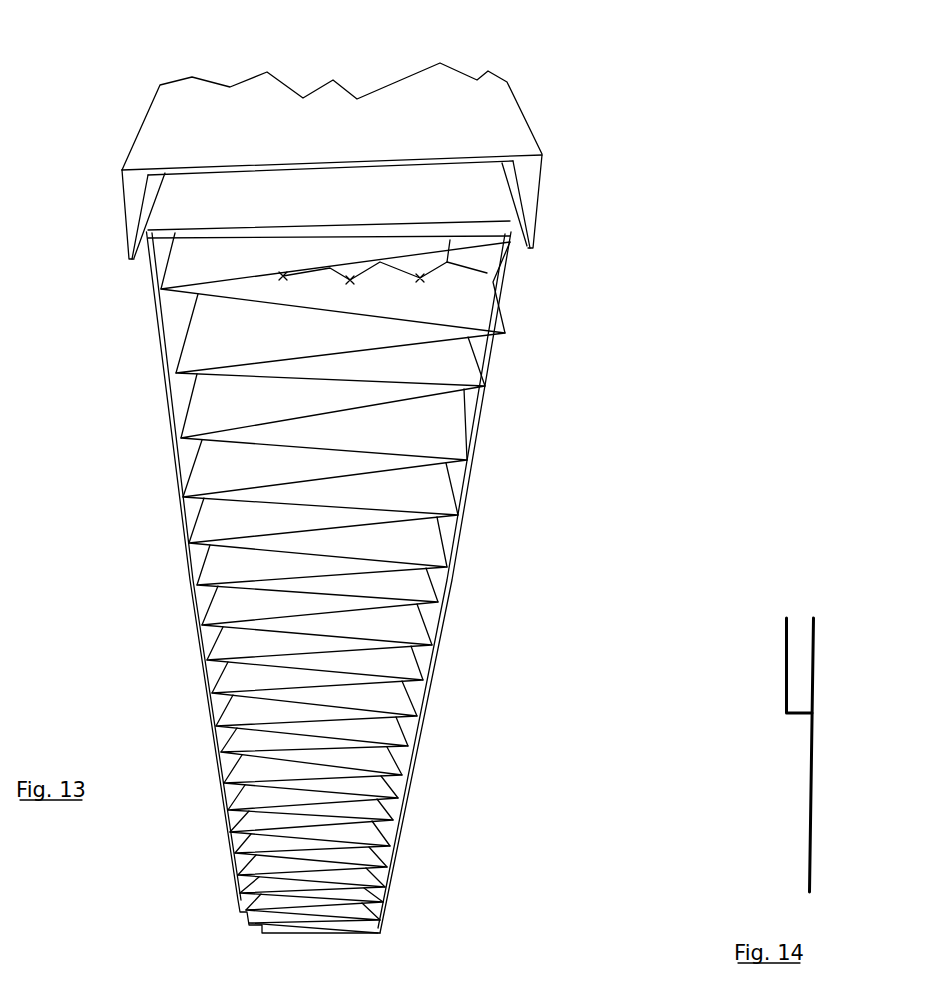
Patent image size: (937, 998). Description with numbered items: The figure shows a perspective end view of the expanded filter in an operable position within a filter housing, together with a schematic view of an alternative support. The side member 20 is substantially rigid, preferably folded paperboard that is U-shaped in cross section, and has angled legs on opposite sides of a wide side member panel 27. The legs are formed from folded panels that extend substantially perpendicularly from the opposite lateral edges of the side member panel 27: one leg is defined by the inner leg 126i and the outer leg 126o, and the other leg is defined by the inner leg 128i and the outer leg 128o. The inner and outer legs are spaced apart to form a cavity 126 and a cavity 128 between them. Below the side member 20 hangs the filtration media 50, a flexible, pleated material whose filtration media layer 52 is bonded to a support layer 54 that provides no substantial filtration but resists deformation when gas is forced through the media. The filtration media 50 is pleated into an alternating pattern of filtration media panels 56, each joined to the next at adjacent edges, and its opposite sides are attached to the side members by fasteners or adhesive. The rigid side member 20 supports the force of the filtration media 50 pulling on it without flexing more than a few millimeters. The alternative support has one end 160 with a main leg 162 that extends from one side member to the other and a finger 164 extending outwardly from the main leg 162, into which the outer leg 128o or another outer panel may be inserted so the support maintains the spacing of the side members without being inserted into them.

In FIG. 13, the side member 20 is at (332, 124).
In FIG. 13, the side member panel 27 is at (225, 125).
In FIG. 13, the cavity 126 is at (91, 193).
In FIG. 13, the inner leg 126i is at (138, 217).
In FIG. 13, the outer leg 126o is at (125, 237).
In FIG. 13, the cavity 128 is at (575, 173).
In FIG. 13, the inner leg 128i is at (518, 188).
In FIG. 13, the outer leg 128o is at (538, 213).
In FIG. 13, the support layer 54 is at (422, 278).
In FIG. 13, the filtration media layer 52 is at (405, 495).
In FIG. 13, the filtration media 50 is at (406, 694).
In FIG. 13, the filtration media panels 56 is at (295, 497).
In FIG. 14, the end of support 160 is at (772, 755).
In FIG. 14, the main leg 162 is at (812, 810).
In FIG. 14, the finger 164 is at (786, 672).